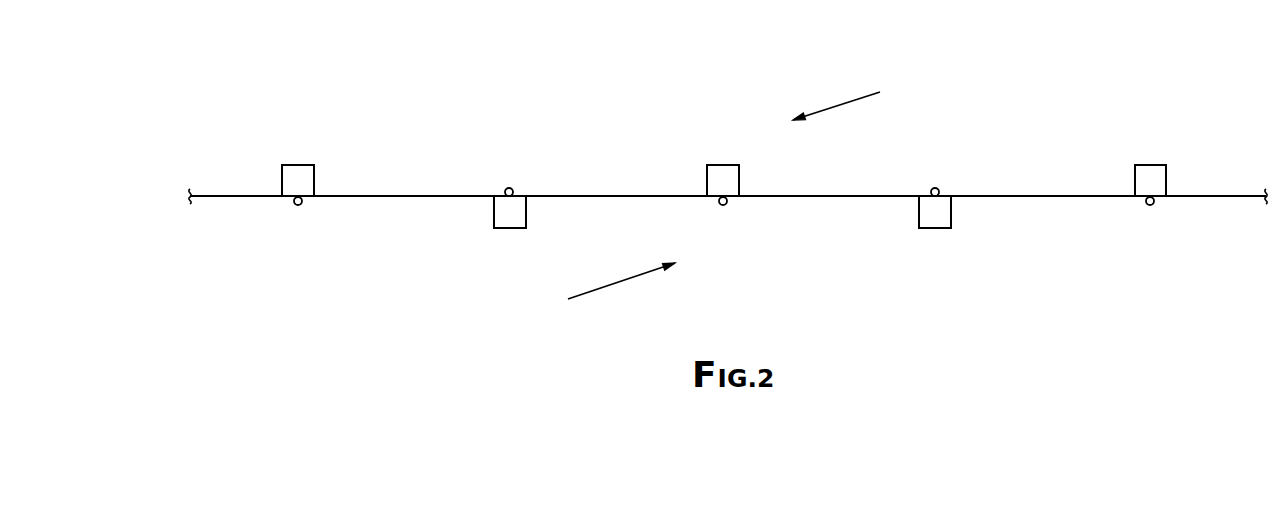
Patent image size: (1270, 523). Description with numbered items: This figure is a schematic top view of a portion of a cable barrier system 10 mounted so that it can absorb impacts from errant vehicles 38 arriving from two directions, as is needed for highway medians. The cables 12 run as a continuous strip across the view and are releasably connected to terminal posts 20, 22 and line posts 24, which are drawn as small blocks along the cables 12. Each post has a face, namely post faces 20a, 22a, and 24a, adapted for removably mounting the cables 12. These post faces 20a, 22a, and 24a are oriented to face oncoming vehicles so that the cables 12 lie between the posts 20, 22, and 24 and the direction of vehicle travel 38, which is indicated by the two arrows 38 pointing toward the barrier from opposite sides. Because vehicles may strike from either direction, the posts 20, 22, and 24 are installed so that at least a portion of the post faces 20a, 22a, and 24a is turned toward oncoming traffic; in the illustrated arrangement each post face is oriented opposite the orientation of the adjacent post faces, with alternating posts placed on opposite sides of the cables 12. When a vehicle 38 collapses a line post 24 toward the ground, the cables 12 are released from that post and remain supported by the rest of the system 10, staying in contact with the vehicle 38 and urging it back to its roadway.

The cable barrier system 10 is at (423, 112).
The cables 12 is at (1060, 196).
The terminal post 20 is at (292, 165).
The face of terminal post 20a is at (290, 201).
The terminal post 22 is at (723, 165).
The face of terminal post 22a is at (513, 190).
The line post 24 is at (1155, 165).
The face of line post 24a is at (1160, 201).
The vehicle / direction of vehicle travel 38 is at (852, 100).